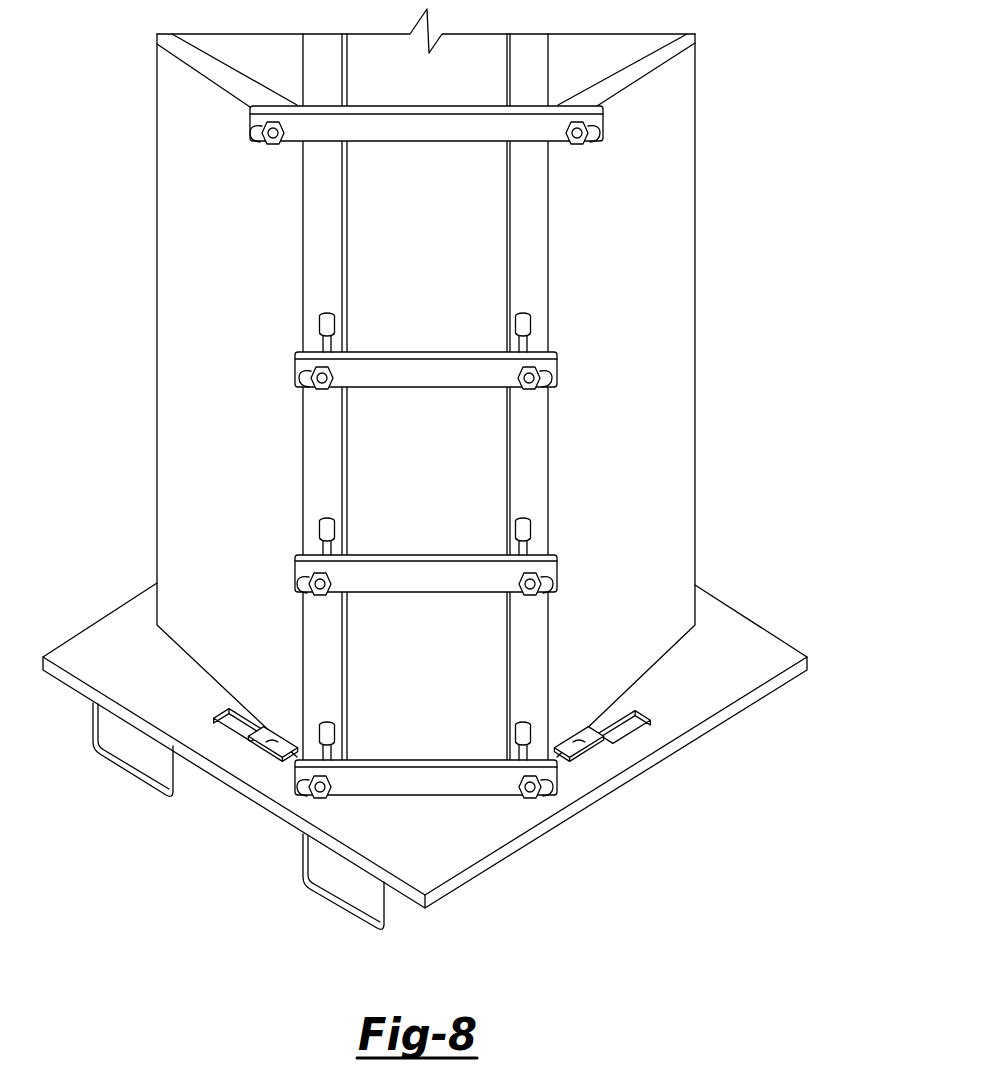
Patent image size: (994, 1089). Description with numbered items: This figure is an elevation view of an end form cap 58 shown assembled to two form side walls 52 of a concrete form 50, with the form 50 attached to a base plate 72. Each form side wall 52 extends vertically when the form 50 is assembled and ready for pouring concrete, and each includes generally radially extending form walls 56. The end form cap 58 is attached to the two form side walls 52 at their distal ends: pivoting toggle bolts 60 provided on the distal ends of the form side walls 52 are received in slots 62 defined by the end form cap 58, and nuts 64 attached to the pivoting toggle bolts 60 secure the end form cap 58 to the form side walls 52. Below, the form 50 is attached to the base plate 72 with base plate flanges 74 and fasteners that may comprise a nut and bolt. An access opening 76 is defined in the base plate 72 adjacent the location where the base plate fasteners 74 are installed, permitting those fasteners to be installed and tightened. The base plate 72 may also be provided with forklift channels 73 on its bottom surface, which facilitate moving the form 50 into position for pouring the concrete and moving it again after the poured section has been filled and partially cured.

The form 50 is at (435, 477).
The form side wall 52 is at (190, 386).
The radially extending form wall 56 is at (239, 265).
The end form cap 58 is at (483, 487).
The pivoting toggle bolt 60 is at (328, 548).
The slot 62 is at (255, 128).
The nut 64 is at (275, 141).
The base plate 72 is at (732, 637).
The forklift channel 73 is at (137, 757).
The base plate flange 74 is at (585, 747).
The access opening 76 is at (633, 727).